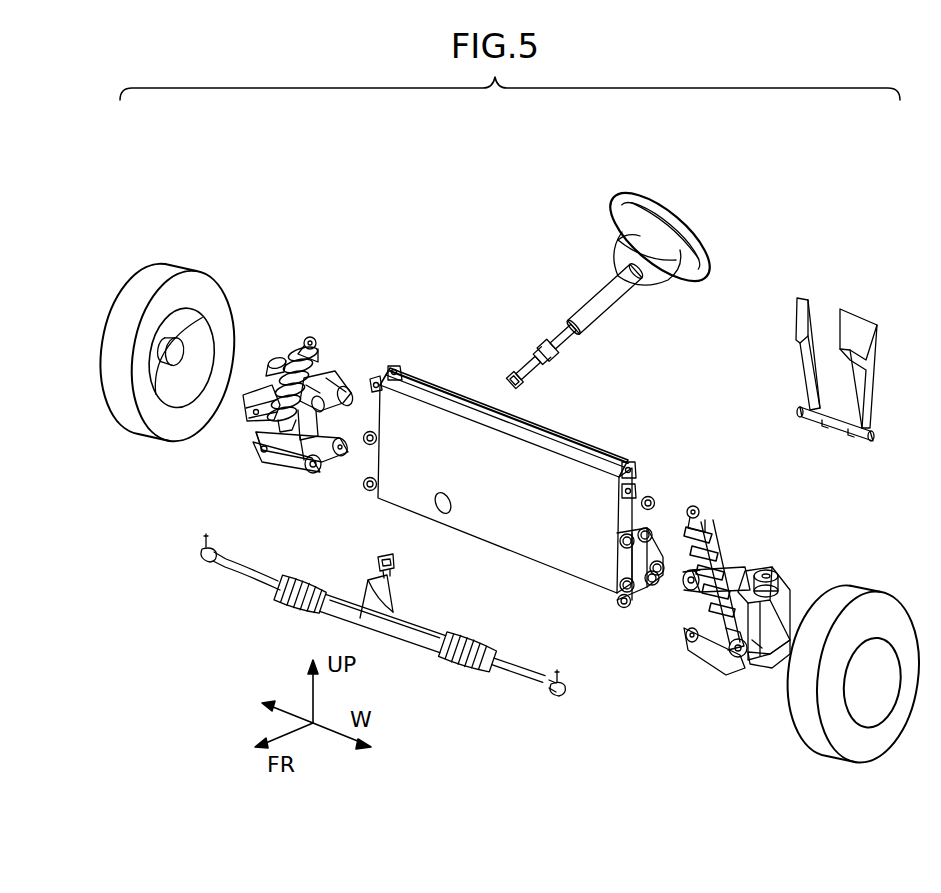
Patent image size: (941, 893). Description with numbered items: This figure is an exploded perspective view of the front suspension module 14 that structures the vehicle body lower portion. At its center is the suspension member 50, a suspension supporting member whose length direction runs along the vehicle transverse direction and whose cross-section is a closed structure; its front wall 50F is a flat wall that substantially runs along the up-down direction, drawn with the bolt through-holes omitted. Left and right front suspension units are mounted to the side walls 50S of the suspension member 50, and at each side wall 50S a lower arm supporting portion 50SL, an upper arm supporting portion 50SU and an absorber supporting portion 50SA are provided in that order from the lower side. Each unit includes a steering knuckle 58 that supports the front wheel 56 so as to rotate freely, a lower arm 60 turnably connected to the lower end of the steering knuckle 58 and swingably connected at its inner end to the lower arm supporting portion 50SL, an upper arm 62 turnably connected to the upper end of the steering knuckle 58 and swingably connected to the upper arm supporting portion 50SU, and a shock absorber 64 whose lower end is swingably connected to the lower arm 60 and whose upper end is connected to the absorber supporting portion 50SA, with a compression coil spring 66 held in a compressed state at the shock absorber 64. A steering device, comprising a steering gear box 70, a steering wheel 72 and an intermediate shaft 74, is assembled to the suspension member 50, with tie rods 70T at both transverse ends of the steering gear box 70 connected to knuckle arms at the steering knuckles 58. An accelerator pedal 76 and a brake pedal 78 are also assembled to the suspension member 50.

The front suspension module 14 is at (579, 184).
The suspension member 50 is at (549, 476).
The front wall 50F is at (510, 540).
The side wall 50S is at (625, 573).
The absorber supporting portion 50SA is at (405, 372).
The upper arm supporting portion 50SU is at (371, 382).
The lower arm supporting portion 50SL is at (372, 490).
The front wheel 56 is at (212, 288).
The steering knuckle 58 is at (245, 405).
The lower arm 60 is at (300, 478).
The upper arm 62 is at (315, 385).
The shock absorber 64 is at (302, 342).
The compression coil spring 66 is at (303, 428).
The steering gear box 70 is at (383, 647).
The tie rod 70T is at (245, 575).
The steering wheel 72 is at (681, 216).
The intermediate shaft 74 is at (607, 311).
The accelerator pedal 76 is at (803, 300).
The brake pedal 78 is at (857, 320).